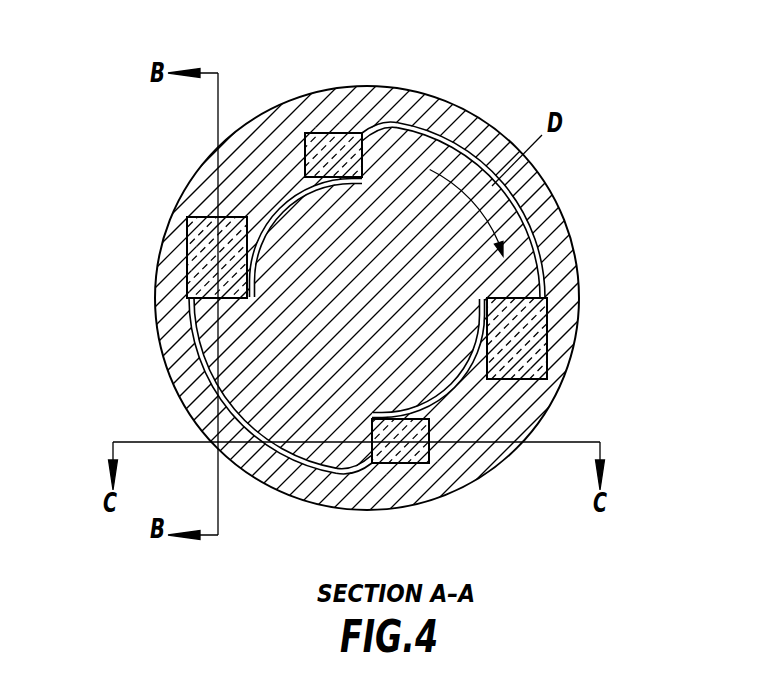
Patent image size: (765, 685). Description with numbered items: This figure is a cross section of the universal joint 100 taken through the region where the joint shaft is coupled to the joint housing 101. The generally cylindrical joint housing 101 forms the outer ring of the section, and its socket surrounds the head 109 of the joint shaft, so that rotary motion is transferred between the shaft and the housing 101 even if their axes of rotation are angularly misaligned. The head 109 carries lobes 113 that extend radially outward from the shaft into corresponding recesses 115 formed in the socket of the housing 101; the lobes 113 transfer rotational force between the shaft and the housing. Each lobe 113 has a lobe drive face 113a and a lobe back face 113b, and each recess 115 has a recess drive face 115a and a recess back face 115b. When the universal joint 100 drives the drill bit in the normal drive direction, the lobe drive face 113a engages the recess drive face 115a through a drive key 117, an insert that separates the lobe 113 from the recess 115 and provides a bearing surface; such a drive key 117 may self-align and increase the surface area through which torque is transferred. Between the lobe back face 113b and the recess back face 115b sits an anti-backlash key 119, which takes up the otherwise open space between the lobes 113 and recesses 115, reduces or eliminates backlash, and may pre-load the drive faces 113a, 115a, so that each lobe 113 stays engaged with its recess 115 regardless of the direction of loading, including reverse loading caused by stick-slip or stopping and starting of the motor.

The universal joint 100 is at (492, 92).
The joint housing 101 is at (178, 349).
The head 109 is at (190, 385).
The lobe 113 is at (183, 313).
The lobe drive face 113a is at (208, 292).
The lobe back face 113b is at (346, 148).
The recess 115 is at (545, 226).
The recess drive face 115a is at (188, 222).
The recess back face 115b is at (318, 133).
The drive key 117 is at (256, 268).
The anti-backlash key 119 is at (329, 168).